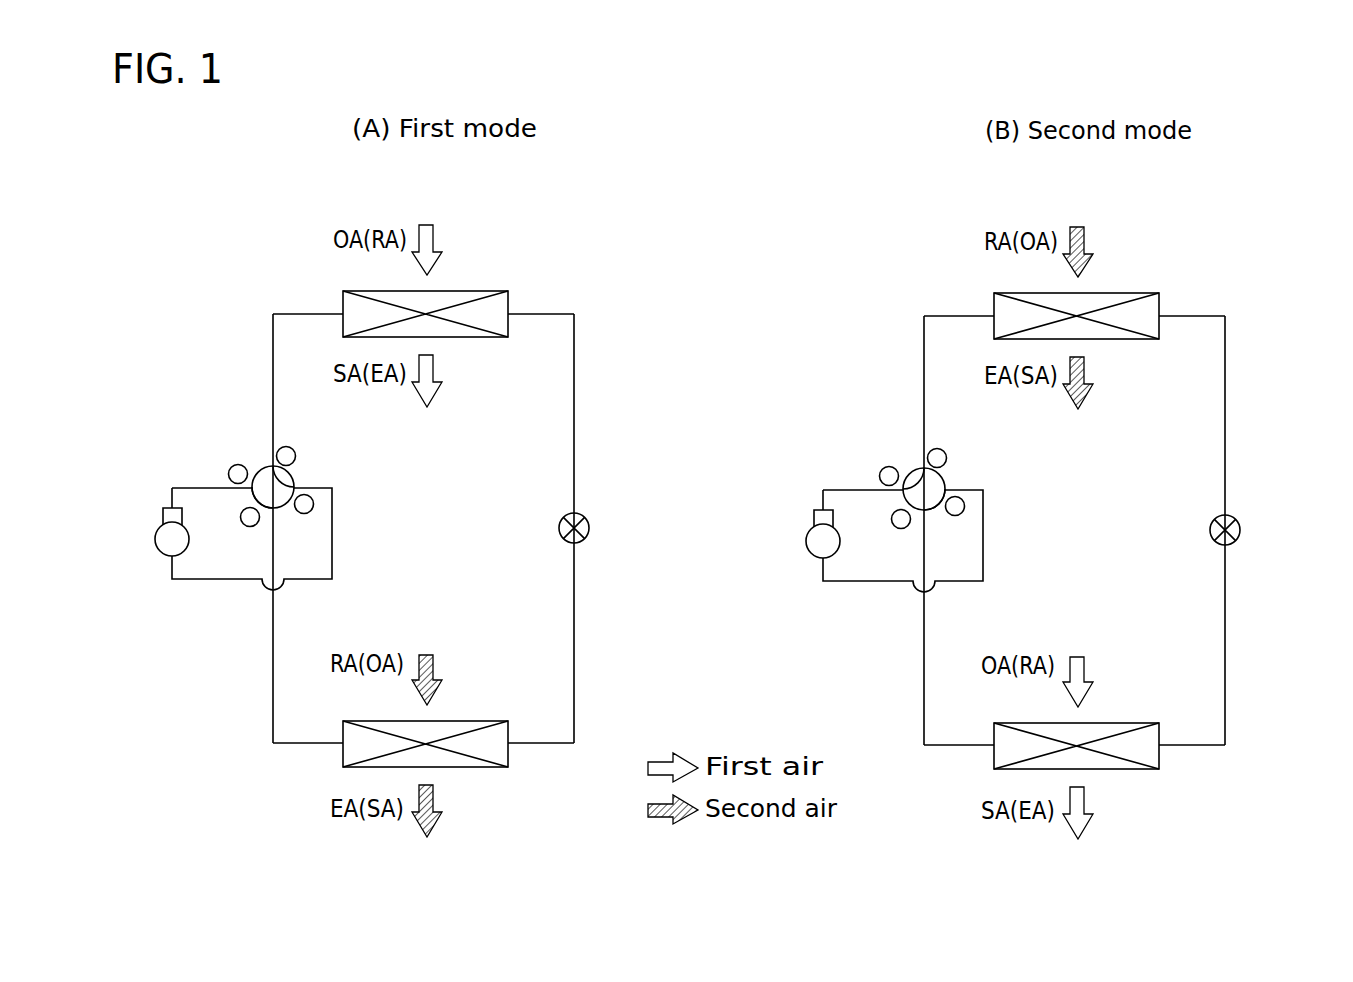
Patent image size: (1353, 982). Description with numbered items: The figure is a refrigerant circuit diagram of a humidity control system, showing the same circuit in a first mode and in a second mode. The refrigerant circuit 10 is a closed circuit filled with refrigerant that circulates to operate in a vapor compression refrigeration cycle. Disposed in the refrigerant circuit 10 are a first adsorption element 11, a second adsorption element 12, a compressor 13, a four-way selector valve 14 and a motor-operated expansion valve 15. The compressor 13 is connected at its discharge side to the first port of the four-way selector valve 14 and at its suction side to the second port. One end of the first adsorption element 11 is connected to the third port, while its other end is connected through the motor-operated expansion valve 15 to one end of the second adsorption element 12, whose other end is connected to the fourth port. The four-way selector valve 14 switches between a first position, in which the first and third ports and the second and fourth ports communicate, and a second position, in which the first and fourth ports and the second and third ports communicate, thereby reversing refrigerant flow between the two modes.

The refrigerant circuit 10 is at (574, 409).
The first adsorption element 11 is at (486, 767).
The second adsorption element 12 is at (485, 291).
The compressor 13 is at (154, 534).
The four-way selector valve 14 is at (292, 478).
The motor-operated expansion valve 15 is at (588, 534).